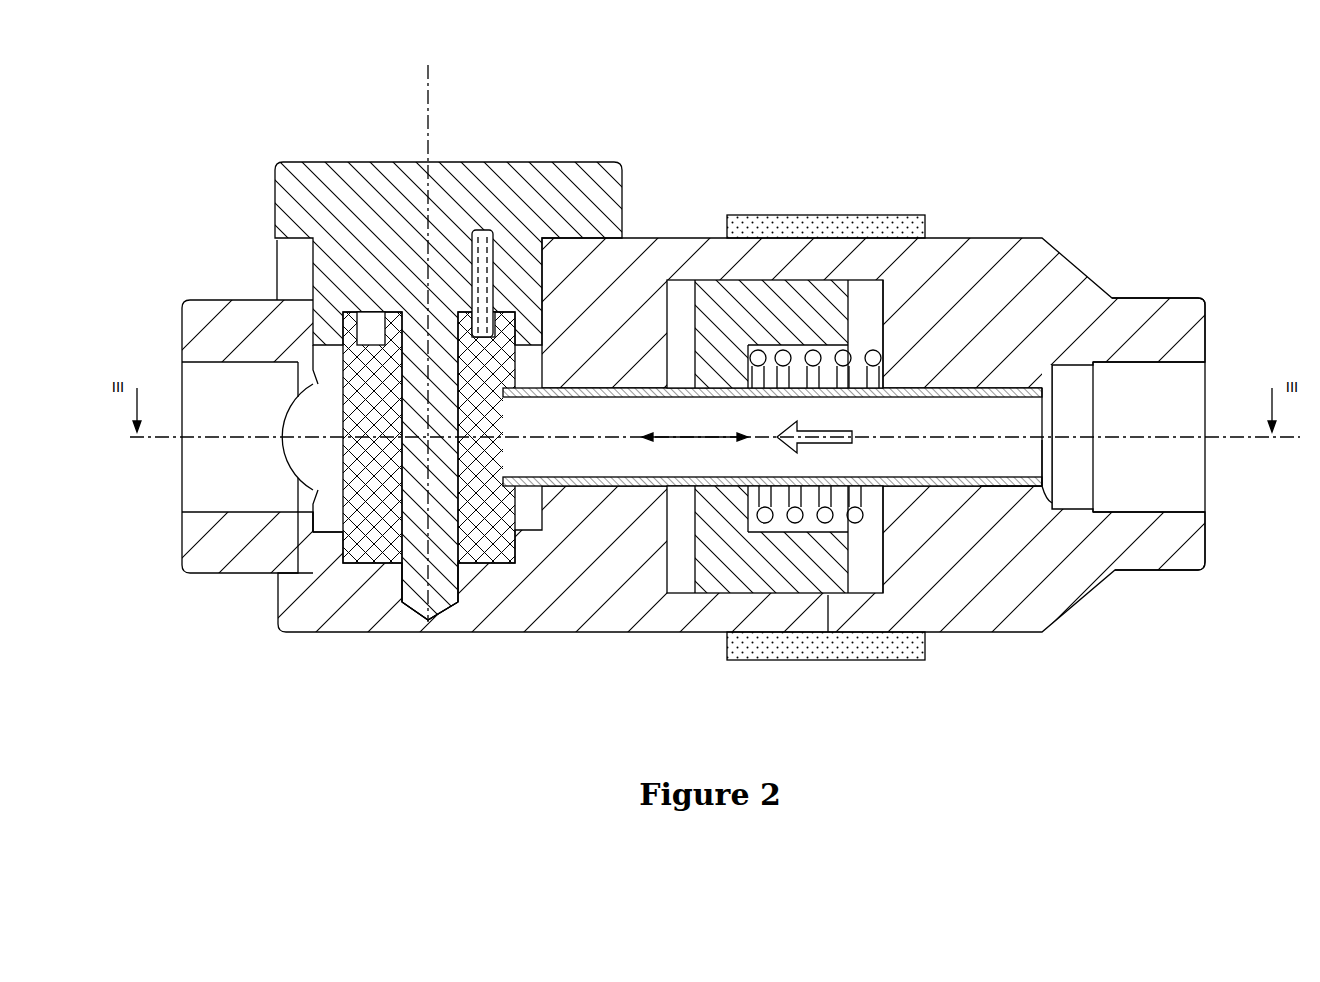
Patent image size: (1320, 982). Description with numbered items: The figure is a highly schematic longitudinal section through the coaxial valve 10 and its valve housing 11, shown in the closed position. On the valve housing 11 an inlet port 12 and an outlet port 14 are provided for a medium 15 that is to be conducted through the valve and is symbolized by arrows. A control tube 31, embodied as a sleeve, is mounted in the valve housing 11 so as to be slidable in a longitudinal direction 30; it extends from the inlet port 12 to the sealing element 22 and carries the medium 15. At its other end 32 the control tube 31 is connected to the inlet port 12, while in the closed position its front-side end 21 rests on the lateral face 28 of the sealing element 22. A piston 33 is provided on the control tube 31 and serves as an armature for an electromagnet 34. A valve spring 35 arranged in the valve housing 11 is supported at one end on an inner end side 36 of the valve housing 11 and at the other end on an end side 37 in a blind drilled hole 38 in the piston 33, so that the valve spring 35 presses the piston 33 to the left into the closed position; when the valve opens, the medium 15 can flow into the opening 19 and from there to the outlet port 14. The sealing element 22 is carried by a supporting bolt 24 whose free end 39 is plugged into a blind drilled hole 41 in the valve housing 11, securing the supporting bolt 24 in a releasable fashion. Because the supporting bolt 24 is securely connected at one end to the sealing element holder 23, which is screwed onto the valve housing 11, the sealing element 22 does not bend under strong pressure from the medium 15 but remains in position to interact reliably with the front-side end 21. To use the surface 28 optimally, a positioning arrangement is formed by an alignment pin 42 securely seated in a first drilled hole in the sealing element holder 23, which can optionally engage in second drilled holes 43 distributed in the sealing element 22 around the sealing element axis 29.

The coaxial valve 10 is at (660, 413).
The valve housing 11 is at (580, 568).
The inlet port 12 is at (1175, 325).
The outlet port 14 is at (218, 307).
The medium 15 is at (830, 428).
The opening 19 is at (313, 520).
The front-side end 21 is at (478, 565).
The sealing element 22 is at (360, 556).
The sealing element holder 23 is at (480, 184).
The supporting bolt 24 is at (312, 507).
The lateral face 28 is at (520, 423).
The sealing element axis 29 is at (426, 95).
The longitudinal direction 30 is at (683, 440).
The control tube 31 is at (1007, 483).
The other end 32 is at (1042, 483).
The piston 33 is at (753, 572).
The electromagnet 34 is at (840, 663).
The valve spring 35 is at (848, 290).
The inner end side 36 is at (872, 330).
The end side 37 is at (690, 572).
The blind drilled hole 38 is at (778, 522).
The free end 39 is at (412, 600).
The blind drilled hole 41 is at (385, 583).
The alignment pin 42 is at (500, 258).
The second drilled holes 43 is at (365, 325).